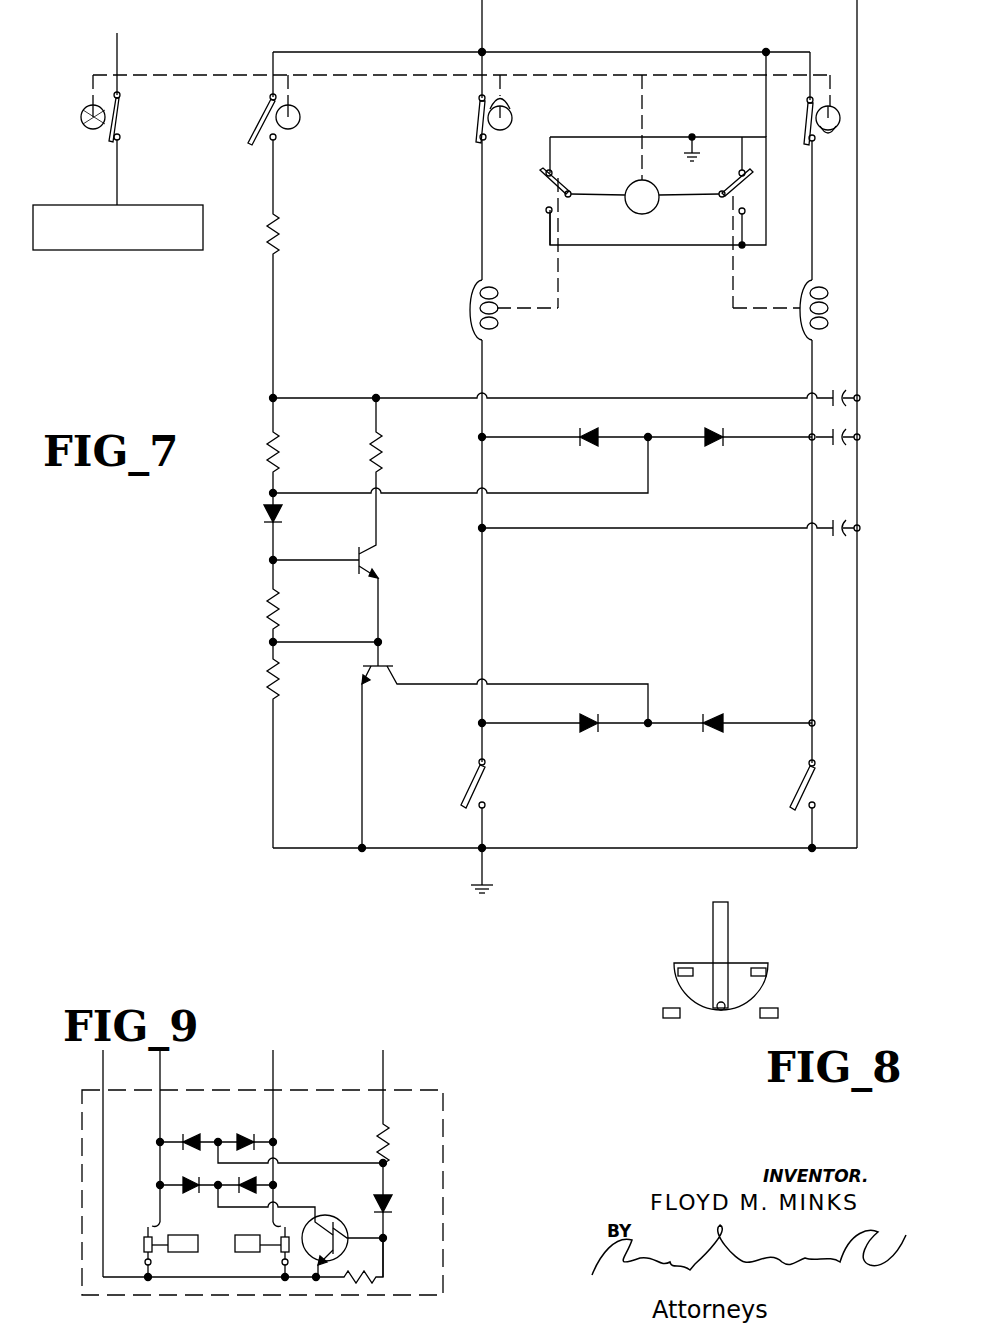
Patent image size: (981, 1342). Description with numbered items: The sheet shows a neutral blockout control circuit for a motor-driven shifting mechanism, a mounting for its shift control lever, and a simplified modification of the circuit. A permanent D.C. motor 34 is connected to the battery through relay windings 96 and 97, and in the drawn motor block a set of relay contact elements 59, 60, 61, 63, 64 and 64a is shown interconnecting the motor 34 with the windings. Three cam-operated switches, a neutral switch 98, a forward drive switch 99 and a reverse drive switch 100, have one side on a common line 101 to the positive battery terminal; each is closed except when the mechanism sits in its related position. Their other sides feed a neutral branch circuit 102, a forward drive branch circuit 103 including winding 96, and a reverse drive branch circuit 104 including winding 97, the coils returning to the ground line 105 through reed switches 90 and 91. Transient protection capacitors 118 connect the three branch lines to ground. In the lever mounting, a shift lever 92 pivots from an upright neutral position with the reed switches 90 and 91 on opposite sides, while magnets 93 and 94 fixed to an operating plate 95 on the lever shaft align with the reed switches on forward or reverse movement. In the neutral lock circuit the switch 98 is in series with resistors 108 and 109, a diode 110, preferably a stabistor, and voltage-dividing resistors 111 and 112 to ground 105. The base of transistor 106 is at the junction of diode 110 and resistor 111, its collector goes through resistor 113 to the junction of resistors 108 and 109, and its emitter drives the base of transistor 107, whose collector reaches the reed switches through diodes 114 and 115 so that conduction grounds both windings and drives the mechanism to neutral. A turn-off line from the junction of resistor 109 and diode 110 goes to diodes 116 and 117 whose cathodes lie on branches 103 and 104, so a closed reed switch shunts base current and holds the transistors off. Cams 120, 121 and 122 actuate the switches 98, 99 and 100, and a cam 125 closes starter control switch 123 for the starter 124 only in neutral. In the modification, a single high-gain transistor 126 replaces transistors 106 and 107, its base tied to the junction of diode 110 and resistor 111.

In FIG. 7, the permanent D.C. motor 34 is at (640, 178).
In FIG. 7, the relay contact 59 is at (571, 191).
In FIG. 7, the relay contact 60 is at (546, 210).
In FIG. 7, the relay contact 61 is at (540, 170).
In FIG. 7, the relay contact 63 is at (721, 180).
In FIG. 7, the relay contact 64 is at (757, 205).
In FIG. 7, the relay contact 64a is at (747, 165).
In FIG. 7, the reed switch 90 is at (487, 788).
In FIG. 8, the reed switch 90 is at (668, 1018).
In FIG. 9, the reed switch 90 is at (281, 1248).
In FIG. 7, the reed switch 91 is at (812, 790).
In FIG. 8, the reed switch 91 is at (774, 1018).
In FIG. 9, the reed switch 91 is at (144, 1246).
In FIG. 8, the shift lever 92 is at (726, 912).
In FIG. 8, the magnet 93 is at (682, 968).
In FIG. 8, the magnet 94 is at (762, 968).
In FIG. 8, the operating plate 95 is at (734, 1020).
In FIG. 7, the relay winding 96 is at (471, 293).
In FIG. 7, the relay winding 97 is at (801, 293).
In FIG. 7, the neutral switch 98 is at (255, 124).
In FIG. 7, the forward drive switch 99 is at (477, 123).
In FIG. 7, the reverse drive switch 100 is at (807, 125).
In FIG. 7, the common line 101 is at (364, 52).
In FIG. 7, the neutral branch circuit 102 is at (272, 176).
In FIG. 9, the neutral branch circuit 102 is at (385, 1106).
In FIG. 7, the forward drive branch circuit 103 is at (484, 358).
In FIG. 9, the forward drive branch circuit 103 is at (275, 1118).
In FIG. 7, the reverse drive branch circuit 104 is at (811, 358).
In FIG. 9, the reverse drive branch circuit 104 is at (158, 1166).
In FIG. 7, the common line 105 is at (430, 850).
In FIG. 9, the common line 105 is at (213, 1282).
In FIG. 7, the control transistor 106 is at (376, 558).
In FIG. 7, the control transistor 107 is at (380, 688).
In FIG. 7, the resistor 108 is at (279, 234).
In FIG. 7, the resistor 109 is at (270, 444).
In FIG. 9, the resistor 109 is at (389, 1136).
In FIG. 7, the diode 110 is at (262, 530).
In FIG. 9, the diode 110 is at (394, 1203).
In FIG. 7, the voltage-dividing resistor 111 is at (270, 611).
In FIG. 9, the voltage-dividing resistor 111 is at (356, 1284).
In FIG. 7, the voltage-dividing resistor 112 is at (270, 677).
In FIG. 7, the resistor 113 is at (374, 453).
In FIG. 7, the diode 114 is at (584, 730).
In FIG. 9, the diode 114 is at (246, 1196).
In FIG. 7, the diode 115 is at (714, 730).
In FIG. 9, the diode 115 is at (190, 1190).
In FIG. 7, the diode 116 is at (590, 428).
In FIG. 9, the diode 116 is at (254, 1116).
In FIG. 7, the diode 117 is at (718, 412).
In FIG. 9, the diode 117 is at (198, 1116).
In FIG. 7, the transient protection capacitors 118 is at (827, 396).
In FIG. 7, the cam 120 is at (300, 120).
In FIG. 7, the cam 121 is at (512, 121).
In FIG. 7, the cam 122 is at (840, 122).
In FIG. 7, the starter control switch 123 is at (122, 122).
In FIG. 7, the starter 124 is at (170, 248).
In FIG. 7, the cam 125 is at (81, 116).
In FIG. 9, the transistor 126 is at (334, 1220).